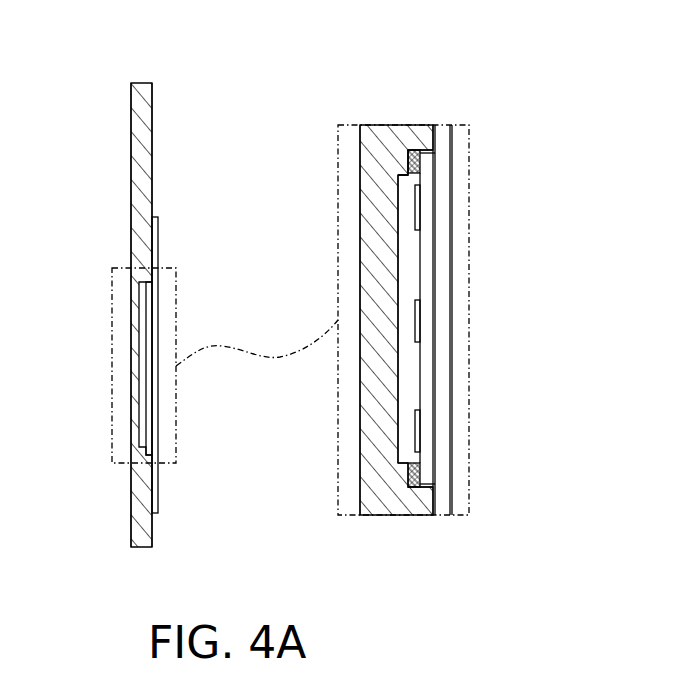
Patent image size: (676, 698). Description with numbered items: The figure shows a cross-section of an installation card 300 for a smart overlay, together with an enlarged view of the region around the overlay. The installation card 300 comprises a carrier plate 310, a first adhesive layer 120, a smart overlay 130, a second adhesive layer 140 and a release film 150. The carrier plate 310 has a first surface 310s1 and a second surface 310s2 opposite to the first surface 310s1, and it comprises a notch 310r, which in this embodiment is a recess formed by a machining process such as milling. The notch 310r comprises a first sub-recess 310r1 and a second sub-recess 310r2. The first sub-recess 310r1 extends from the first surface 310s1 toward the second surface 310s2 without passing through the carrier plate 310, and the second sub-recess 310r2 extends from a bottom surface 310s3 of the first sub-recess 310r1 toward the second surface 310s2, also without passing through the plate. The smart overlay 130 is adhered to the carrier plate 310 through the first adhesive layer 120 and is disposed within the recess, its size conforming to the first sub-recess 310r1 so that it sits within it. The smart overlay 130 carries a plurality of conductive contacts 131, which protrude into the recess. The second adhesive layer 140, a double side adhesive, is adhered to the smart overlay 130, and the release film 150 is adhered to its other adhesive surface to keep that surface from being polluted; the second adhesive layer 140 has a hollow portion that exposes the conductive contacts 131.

The installation card 300 is at (125, 68).
The carrier plate 310 is at (145, 116).
The first surface 310s1 is at (153, 152).
The second surface 310s2 is at (131, 150).
The bottom surface 310s3 is at (436, 502).
The notch 310r is at (545, 402).
The first sub-recess 310r1 is at (405, 463).
The second sub-recess 310r2 is at (400, 405).
The first adhesive layer 120 is at (156, 233).
The smart overlay 130 is at (149, 294).
The conductive contacts 131 is at (413, 208).
The second adhesive layer 140 is at (433, 153).
The release film 150 is at (412, 160).